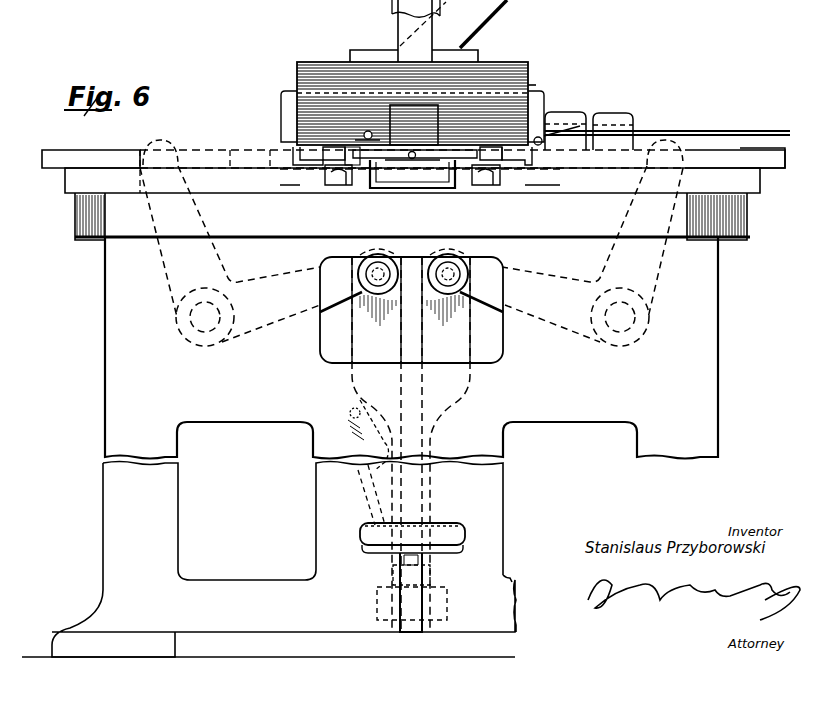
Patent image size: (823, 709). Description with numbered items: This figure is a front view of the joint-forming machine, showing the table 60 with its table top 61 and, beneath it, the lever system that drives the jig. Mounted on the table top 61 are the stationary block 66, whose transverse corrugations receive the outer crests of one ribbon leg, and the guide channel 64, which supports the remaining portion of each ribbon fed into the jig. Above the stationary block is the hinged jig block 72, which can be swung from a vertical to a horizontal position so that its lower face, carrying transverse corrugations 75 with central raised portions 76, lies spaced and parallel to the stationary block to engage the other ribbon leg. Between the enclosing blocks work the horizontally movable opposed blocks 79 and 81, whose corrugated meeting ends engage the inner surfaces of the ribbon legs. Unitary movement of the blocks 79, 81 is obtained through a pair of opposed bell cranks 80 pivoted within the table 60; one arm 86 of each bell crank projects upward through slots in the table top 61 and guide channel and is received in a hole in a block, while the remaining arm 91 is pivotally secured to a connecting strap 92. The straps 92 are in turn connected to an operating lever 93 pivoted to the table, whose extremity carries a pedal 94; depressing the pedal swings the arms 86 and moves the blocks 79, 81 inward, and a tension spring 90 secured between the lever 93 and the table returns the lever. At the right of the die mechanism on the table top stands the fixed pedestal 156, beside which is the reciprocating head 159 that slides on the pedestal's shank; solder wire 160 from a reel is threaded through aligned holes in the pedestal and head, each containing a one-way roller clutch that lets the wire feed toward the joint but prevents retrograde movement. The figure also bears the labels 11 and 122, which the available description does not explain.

The shaft 11 is at (429, 31).
The cap plate 122 is at (478, 56).
The hinged jig block 72 is at (530, 66).
The transverse corrugations 75 is at (530, 86).
The central raised portions 76 is at (410, 128).
The pedestal 156 is at (565, 114).
The reciprocating head 159 is at (618, 114).
The solder wire 160 is at (792, 133).
The horizontally movable opposed block 79 is at (108, 146).
The horizontally movable opposed block 81 is at (785, 158).
The table top 61 is at (725, 190).
The stationary block 66 is at (364, 182).
The guide channel 64 is at (428, 184).
The table 60 is at (665, 372).
The arm of bell crank 86 is at (168, 283).
The remaining arm of bell crank 91 is at (282, 330).
The connecting strap 92 is at (411, 310).
The bell crank 80 is at (340, 318).
The tension spring 90 is at (372, 520).
The pedal 94 is at (452, 536).
The operating lever 93 is at (414, 606).